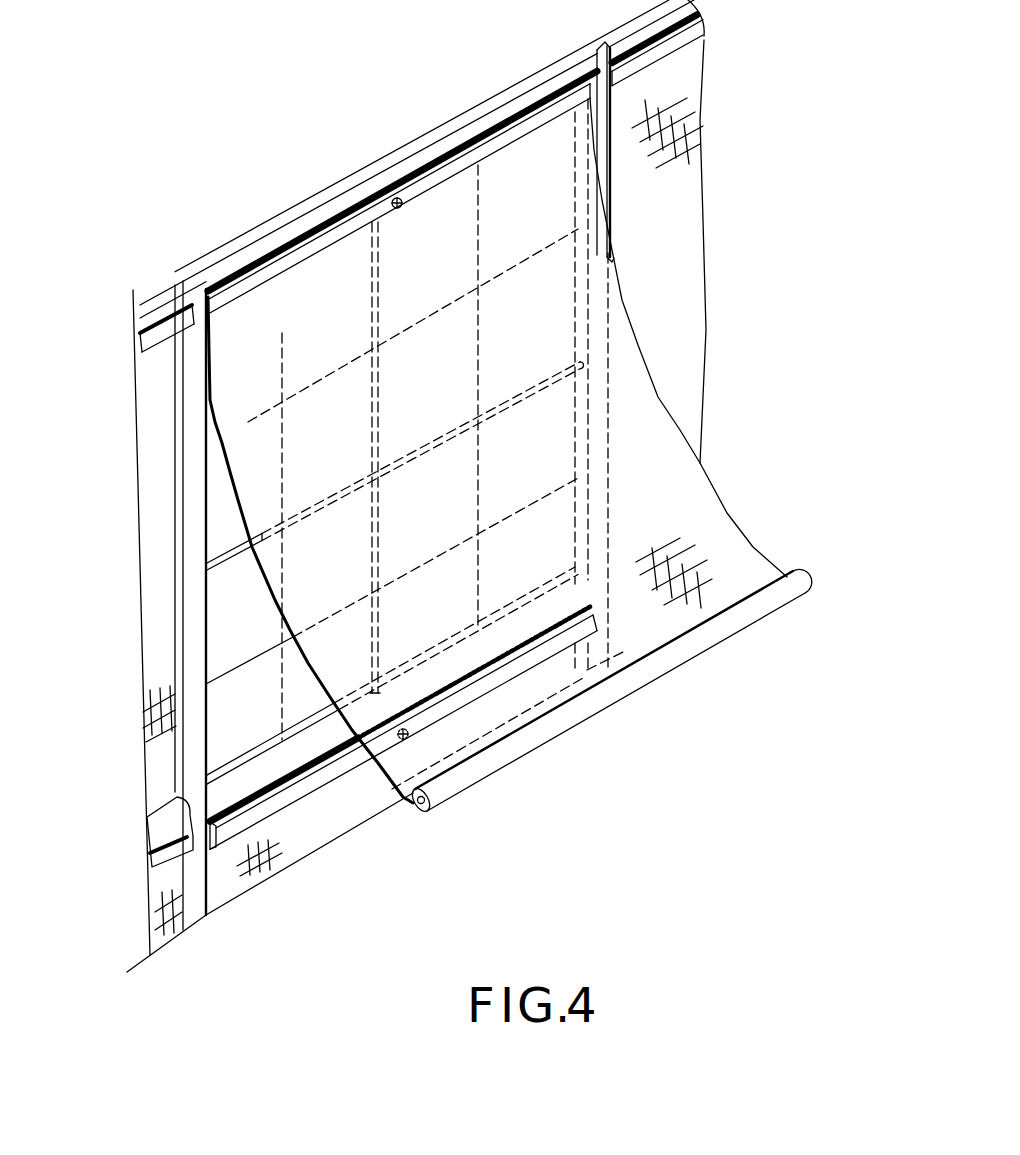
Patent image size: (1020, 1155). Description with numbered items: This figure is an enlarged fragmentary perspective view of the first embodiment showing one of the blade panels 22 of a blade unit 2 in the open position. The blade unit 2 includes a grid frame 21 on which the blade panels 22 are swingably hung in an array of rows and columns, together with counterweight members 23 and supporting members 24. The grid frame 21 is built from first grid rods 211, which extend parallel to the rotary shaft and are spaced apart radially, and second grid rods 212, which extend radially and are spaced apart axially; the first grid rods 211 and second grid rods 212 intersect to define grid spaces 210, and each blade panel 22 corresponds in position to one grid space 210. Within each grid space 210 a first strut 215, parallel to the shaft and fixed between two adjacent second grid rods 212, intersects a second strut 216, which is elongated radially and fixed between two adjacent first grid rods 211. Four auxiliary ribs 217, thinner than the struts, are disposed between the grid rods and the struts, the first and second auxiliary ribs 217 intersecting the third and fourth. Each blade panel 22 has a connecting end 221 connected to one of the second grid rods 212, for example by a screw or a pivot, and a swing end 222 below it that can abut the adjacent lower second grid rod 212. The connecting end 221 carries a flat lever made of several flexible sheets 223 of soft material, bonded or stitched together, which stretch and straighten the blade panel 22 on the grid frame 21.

The blade unit 2 is at (440, 486).
The grid frame 21 is at (423, 486).
The grid space 210 is at (217, 502).
The first grid rod 211 is at (595, 325).
The second grid rod 212 is at (377, 177).
The first strut 215 is at (372, 290).
The second strut 216 is at (227, 558).
The auxiliary rib 217 is at (248, 422).
The blade panel 22 is at (510, 463).
The connecting end 221 is at (545, 160).
The swing end 222 is at (597, 674).
The flexible sheet 223 is at (494, 136).
The counterweight member 23 is at (440, 812).
The supporting member 24 is at (410, 810).